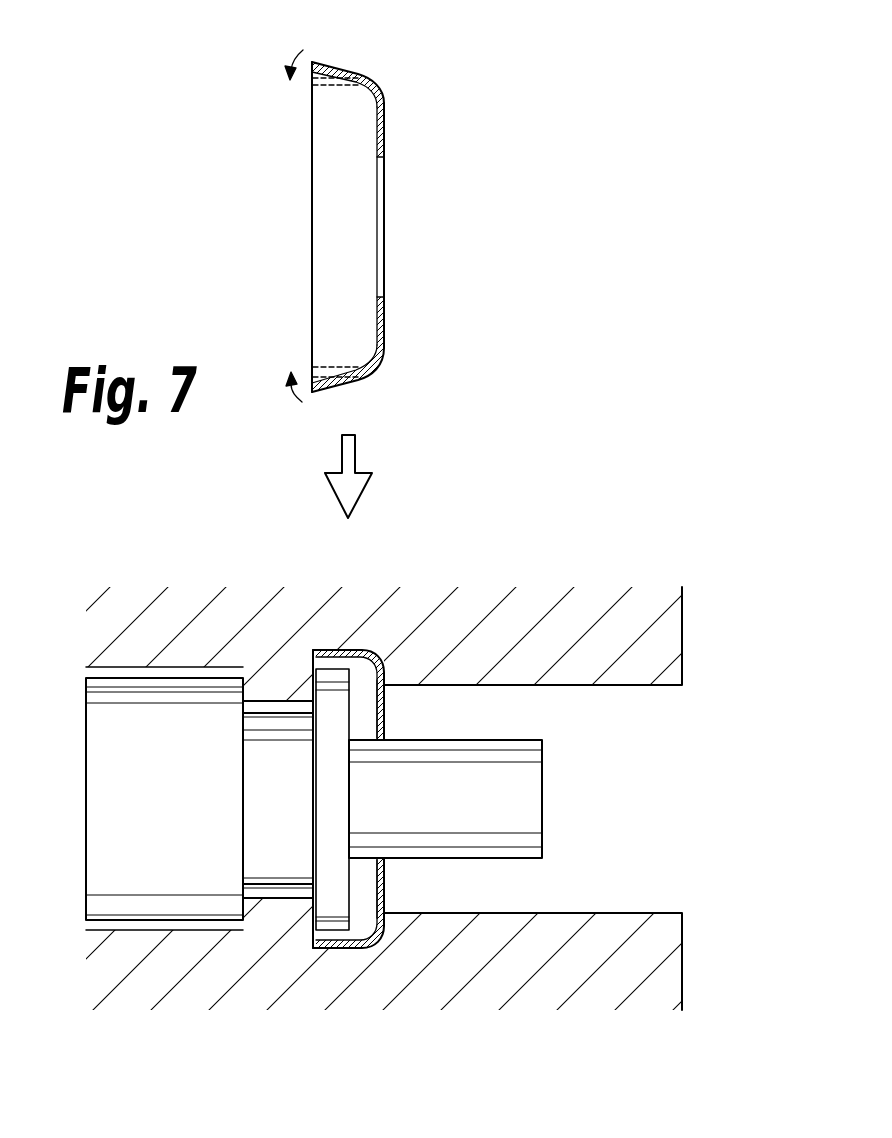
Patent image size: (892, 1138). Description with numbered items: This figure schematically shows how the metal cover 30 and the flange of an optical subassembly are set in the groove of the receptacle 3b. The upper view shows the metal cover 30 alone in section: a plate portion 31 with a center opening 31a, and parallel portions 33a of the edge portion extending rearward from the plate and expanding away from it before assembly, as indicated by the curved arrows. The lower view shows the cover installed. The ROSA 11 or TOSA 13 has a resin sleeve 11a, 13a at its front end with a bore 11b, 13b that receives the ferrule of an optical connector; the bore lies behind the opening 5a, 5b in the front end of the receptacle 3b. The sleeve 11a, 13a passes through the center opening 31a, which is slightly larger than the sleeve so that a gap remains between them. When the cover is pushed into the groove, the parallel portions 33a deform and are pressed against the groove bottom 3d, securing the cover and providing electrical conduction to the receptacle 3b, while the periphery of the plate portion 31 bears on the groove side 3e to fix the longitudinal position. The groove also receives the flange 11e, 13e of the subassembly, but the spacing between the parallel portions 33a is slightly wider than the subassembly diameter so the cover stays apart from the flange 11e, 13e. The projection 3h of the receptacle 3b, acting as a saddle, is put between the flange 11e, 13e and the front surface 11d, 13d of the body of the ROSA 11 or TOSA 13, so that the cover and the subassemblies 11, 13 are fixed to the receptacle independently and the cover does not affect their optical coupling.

The metal cover 30 is at (387, 226).
The plate portion 31 is at (388, 322).
The center opening 31a is at (385, 201).
The parallel portions 33a is at (374, 539).
The receptacle 3b is at (587, 613).
The bottom of the groove 3d is at (366, 650).
The side of the groove 3e is at (385, 706).
The projection 3h is at (277, 687).
The ROSA 11 is at (175, 803).
The TOSA 13 is at (175, 803).
The front surface of the body of the ROSA 11d is at (175, 723).
The front surface of the body of the TOSA 13d is at (245, 687).
The flange of the ROSA 11e is at (398, 799).
The flange of the TOSA 13e is at (336, 804).
The bore of the sleeve 11b is at (508, 817).
The bore of the sleeve 13b is at (508, 817).
The sleeve 11a is at (508, 822).
The sleeve 13a is at (517, 818).
The opening 5a is at (730, 823).
The opening 5b is at (660, 821).